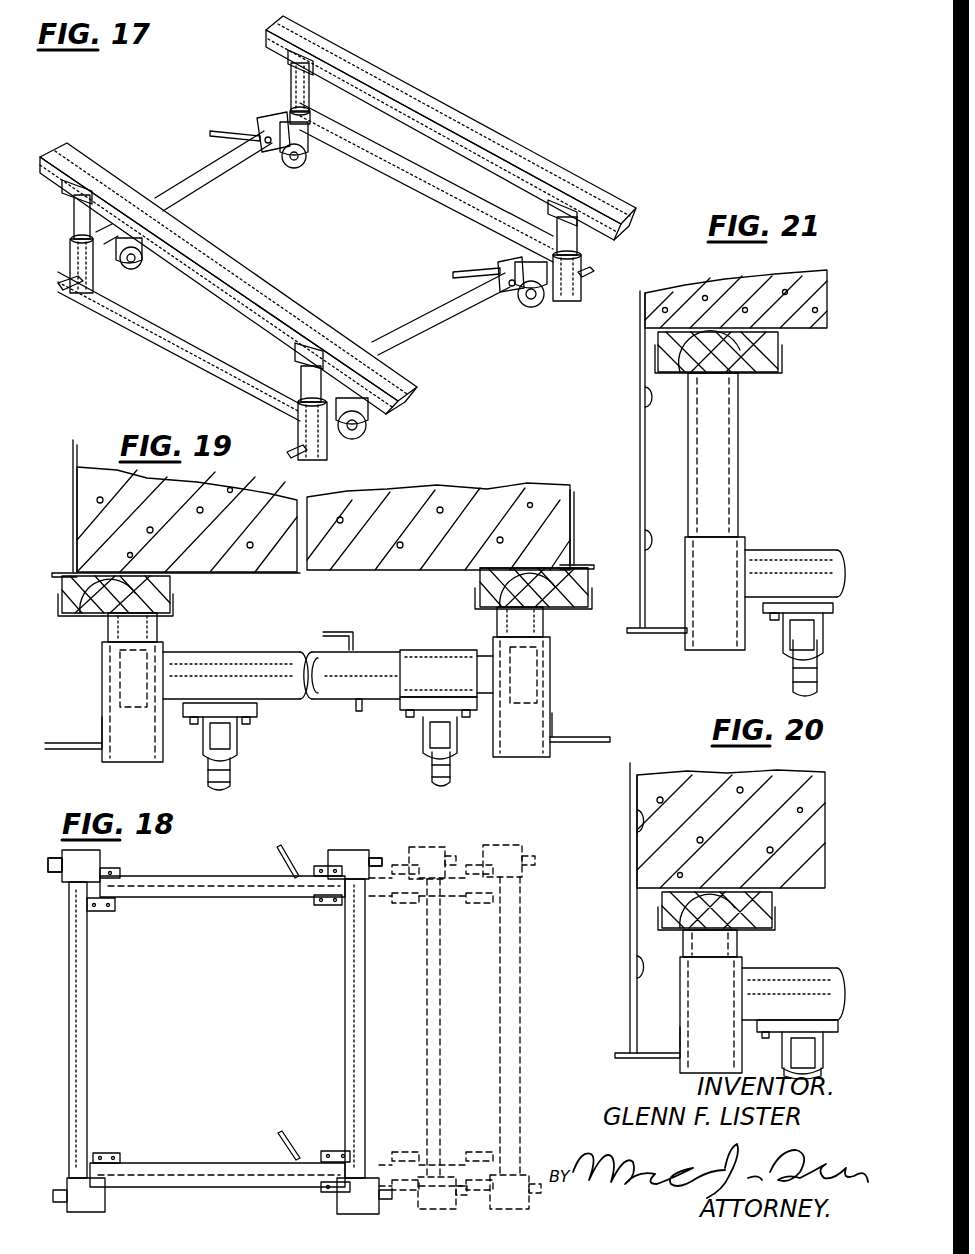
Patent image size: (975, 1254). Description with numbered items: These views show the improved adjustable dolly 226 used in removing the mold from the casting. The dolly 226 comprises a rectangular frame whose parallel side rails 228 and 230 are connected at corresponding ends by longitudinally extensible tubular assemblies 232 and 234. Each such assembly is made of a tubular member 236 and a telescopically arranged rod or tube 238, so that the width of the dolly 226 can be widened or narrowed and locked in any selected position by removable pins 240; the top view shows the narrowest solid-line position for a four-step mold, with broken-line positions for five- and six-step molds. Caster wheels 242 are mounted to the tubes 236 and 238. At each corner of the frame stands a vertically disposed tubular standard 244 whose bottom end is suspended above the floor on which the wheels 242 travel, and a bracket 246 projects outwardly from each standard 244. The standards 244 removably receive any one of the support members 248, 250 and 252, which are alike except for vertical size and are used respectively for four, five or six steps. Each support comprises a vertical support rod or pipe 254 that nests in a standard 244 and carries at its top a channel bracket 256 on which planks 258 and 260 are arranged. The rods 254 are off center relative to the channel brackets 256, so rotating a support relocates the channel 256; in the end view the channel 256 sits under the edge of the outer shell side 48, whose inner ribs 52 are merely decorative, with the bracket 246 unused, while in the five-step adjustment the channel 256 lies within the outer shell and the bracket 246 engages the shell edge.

In FIG. 21, the side 48 is at (634, 444).
In FIG. 20, the side 48 is at (632, 937).
In FIG. 21, the rib 52 is at (650, 530).
In FIG. 20, the rib 52 is at (644, 976).
In FIG. 17, the adjustable dolly 226 is at (451, 128).
In FIG. 18, the adjustable dolly 226 is at (324, 1021).
In FIG. 17, the side rail 228 is at (183, 334).
In FIG. 18, the side rail 228 is at (88, 1002).
In FIG. 17, the side rail 230 is at (407, 183).
In FIG. 18, the side rail 230 is at (345, 1007).
In FIG. 17, the longitudinally extensible tubular assembly 232 is at (165, 190).
In FIG. 17, the longitudinally extensible tubular assembly 234 is at (303, 255).
In FIG. 17, the tubular member 236 is at (200, 183).
In FIG. 19, the tubular member 236 is at (276, 650).
In FIG. 21, the tubular member 236 is at (800, 550).
In FIG. 20, the tubular member 236 is at (827, 968).
In FIG. 18, the tubular member 236 is at (204, 875).
In FIG. 17, the telescopically arranged rod or tube 238 is at (268, 150).
In FIG. 19, the telescopically arranged rod or tube 238 is at (480, 651).
In FIG. 18, the telescopically arranged rod or tube 238 is at (311, 905).
In FIG. 17, the removable pin 240 is at (225, 132).
In FIG. 19, the removable pin 240 is at (342, 632).
In FIG. 18, the removable pin 240 is at (296, 850).
In FIG. 17, the caster wheel 242 is at (127, 267).
In FIG. 19, the caster wheel 242 is at (233, 775).
In FIG. 21, the caster wheel 242 is at (797, 670).
In FIG. 20, the caster wheel 242 is at (797, 1049).
In FIG. 17, the tubular standard 244 is at (290, 98).
In FIG. 19, the tubular standard 244 is at (102, 668).
In FIG. 21, the tubular standard 244 is at (717, 537).
In FIG. 20, the tubular standard 244 is at (744, 968).
In FIG. 17, the bracket 246 is at (76, 294).
In FIG. 19, the bracket 246 is at (70, 742).
In FIG. 21, the bracket 246 is at (663, 635).
In FIG. 20, the bracket 246 is at (656, 1060).
In FIG. 18, the bracket 246 is at (394, 856).
In FIG. 21, the support member 248 is at (752, 511).
In FIG. 19, the support member 250 is at (356, 626).
In FIG. 20, the support member 252 is at (748, 943).
In FIG. 19, the vertical support rod or pipe 254 is at (548, 632).
In FIG. 21, the vertical support rod or pipe 254 is at (737, 457).
In FIG. 17, the channel bracket 256 is at (286, 60).
In FIG. 19, the channel bracket 256 is at (475, 598).
In FIG. 21, the channel bracket 256 is at (782, 360).
In FIG. 20, the channel bracket 256 is at (775, 916).
In FIG. 18, the channel bracket 256 is at (100, 856).
In FIG. 17, the plank 258 is at (235, 256).
In FIG. 19, the plank 258 is at (169, 582).
In FIG. 21, the plank 258 is at (778, 338).
In FIG. 20, the plank 258 is at (662, 899).
In FIG. 17, the plank 260 is at (463, 120).
In FIG. 19, the plank 260 is at (478, 580).